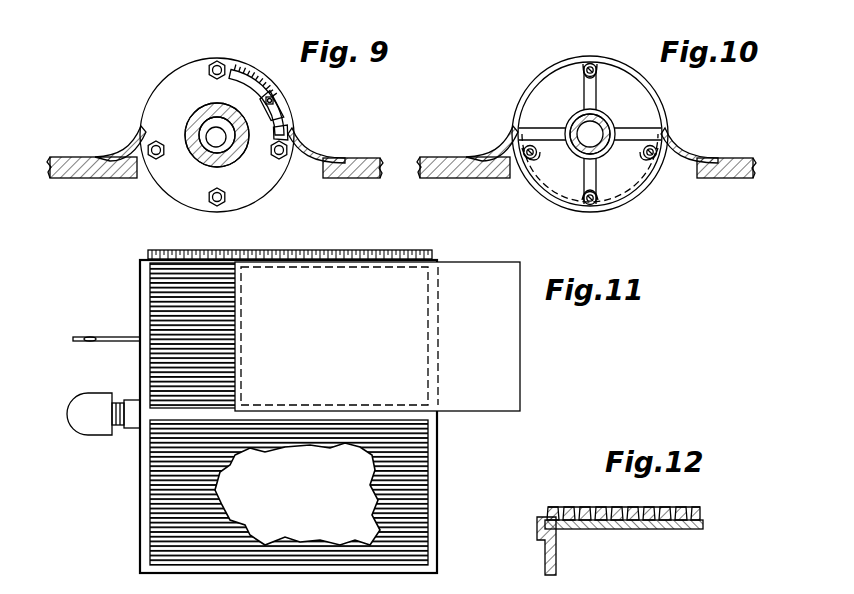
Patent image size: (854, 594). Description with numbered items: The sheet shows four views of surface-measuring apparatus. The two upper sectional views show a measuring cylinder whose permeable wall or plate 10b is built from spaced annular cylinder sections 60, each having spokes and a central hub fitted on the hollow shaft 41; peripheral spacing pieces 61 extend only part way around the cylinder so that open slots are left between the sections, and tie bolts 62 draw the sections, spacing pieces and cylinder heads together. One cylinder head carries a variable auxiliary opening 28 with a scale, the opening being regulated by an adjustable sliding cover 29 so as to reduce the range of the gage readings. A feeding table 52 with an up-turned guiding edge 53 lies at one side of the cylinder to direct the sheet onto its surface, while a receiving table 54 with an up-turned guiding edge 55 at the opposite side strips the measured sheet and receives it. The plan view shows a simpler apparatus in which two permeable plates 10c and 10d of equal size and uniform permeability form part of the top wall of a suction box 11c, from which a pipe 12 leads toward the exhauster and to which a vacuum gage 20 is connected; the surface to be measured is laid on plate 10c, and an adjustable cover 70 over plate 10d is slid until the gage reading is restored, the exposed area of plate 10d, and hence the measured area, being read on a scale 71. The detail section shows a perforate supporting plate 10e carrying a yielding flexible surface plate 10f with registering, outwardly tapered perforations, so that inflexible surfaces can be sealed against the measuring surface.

In FIG. 9, the tie bolts 62 is at (219, 61).
In FIG. 10, the tie bolts 62 is at (590, 64).
In FIG. 9, the auxiliary opening 28 is at (247, 80).
In FIG. 9, the sliding cover 29 is at (282, 126).
In FIG. 9, the hollow shaft 41 is at (205, 118).
In FIG. 10, the hollow shaft 41 is at (604, 122).
In FIG. 9, the up-turned guiding edge 55 is at (125, 147).
In FIG. 10, the up-turned guiding edge 55 is at (500, 148).
In FIG. 9, the receiving table 54 is at (62, 158).
In FIG. 10, the receiving table 54 is at (447, 158).
In FIG. 9, the up-turned guiding edge 53 is at (305, 150).
In FIG. 10, the up-turned guiding edge 53 is at (678, 148).
In FIG. 9, the feeding table 52 is at (355, 160).
In FIG. 10, the feeding table 52 is at (728, 160).
In FIG. 10, the permeable wall or plate 10b is at (560, 72).
In FIG. 10, the cylinder sections 60 is at (600, 66).
In FIG. 10, the peripheral spacing pieces 61 is at (642, 190).
In FIG. 11, the scale 71 is at (388, 251).
In FIG. 11, the adjustable cover 70 is at (477, 265).
In FIG. 11, the vacuum gage 20 is at (86, 342).
In FIG. 11, the permeable plate 10d is at (152, 361).
In FIG. 11, the pipe 12 is at (80, 430).
In FIG. 11, the suction box 11c is at (144, 449).
In FIG. 11, the permeable plate 10c is at (155, 538).
In FIG. 12, the flexible surface plate 10f is at (568, 508).
In FIG. 12, the perforate supporting plate 10e is at (611, 530).